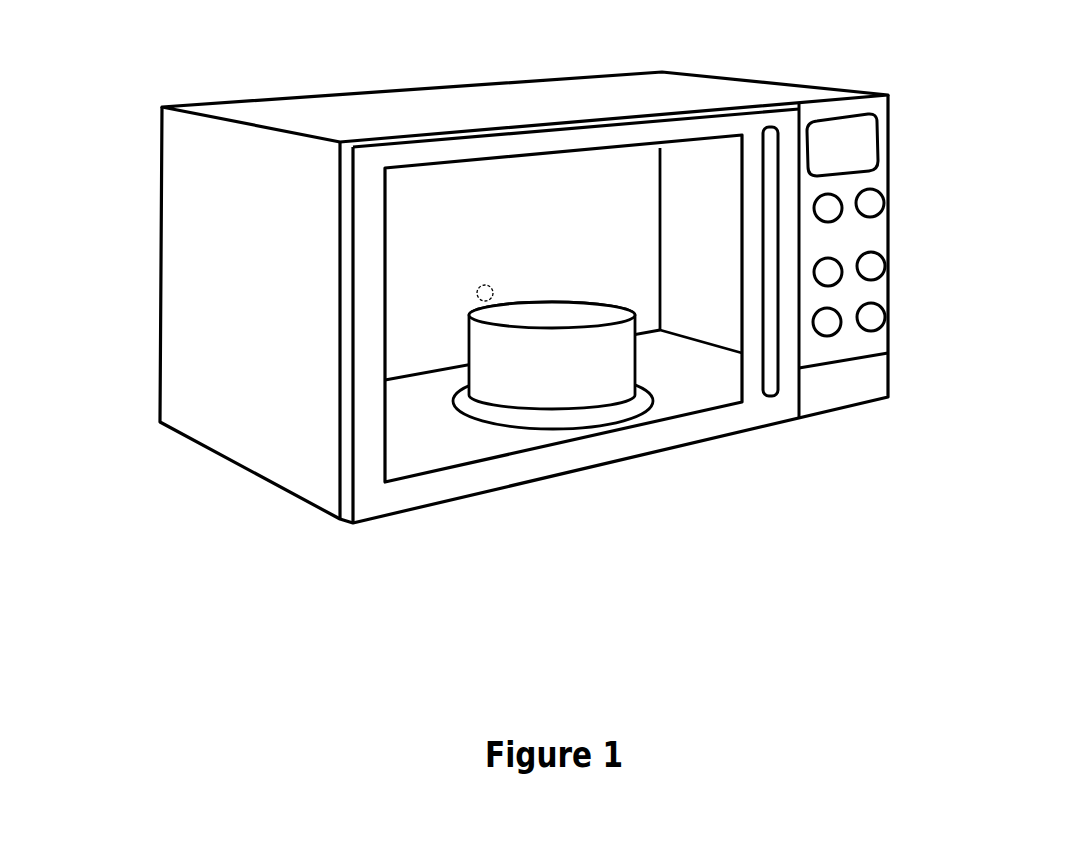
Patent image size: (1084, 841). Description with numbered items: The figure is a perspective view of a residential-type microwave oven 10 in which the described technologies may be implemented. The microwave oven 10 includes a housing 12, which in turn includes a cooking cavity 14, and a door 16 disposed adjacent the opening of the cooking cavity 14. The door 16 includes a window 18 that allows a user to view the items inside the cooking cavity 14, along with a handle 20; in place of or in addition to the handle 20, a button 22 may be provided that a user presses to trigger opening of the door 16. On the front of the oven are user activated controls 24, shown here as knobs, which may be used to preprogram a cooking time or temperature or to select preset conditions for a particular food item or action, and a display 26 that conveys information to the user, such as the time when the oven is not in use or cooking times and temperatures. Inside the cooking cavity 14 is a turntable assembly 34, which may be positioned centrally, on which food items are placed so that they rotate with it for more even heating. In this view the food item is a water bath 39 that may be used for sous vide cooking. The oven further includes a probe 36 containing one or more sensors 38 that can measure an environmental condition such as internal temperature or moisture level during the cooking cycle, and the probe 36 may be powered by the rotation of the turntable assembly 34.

The microwave oven 10 is at (108, 147).
The housing 12 is at (302, 117).
The cooking cavity 14 is at (477, 185).
The door 16 is at (370, 475).
The window 18 is at (688, 358).
The handle 20 is at (770, 355).
The button 22 is at (843, 375).
The user activated controls 24 is at (886, 240).
The display 26 is at (842, 138).
The turntable assembly 34 is at (515, 410).
The probe 36 is at (482, 286).
The sensor 38 is at (478, 300).
The water bath 39 is at (585, 372).